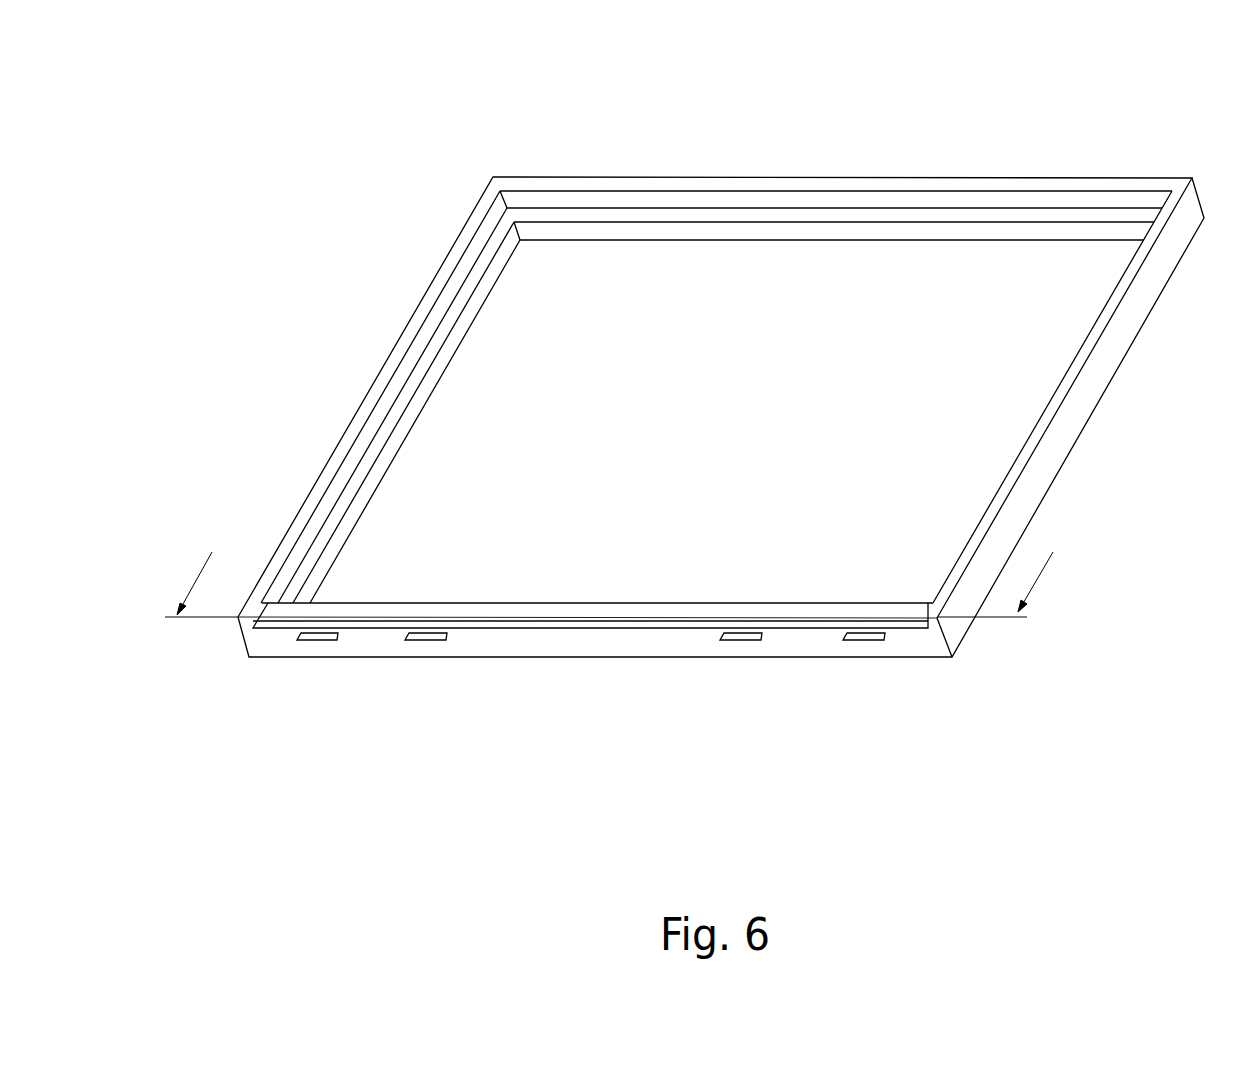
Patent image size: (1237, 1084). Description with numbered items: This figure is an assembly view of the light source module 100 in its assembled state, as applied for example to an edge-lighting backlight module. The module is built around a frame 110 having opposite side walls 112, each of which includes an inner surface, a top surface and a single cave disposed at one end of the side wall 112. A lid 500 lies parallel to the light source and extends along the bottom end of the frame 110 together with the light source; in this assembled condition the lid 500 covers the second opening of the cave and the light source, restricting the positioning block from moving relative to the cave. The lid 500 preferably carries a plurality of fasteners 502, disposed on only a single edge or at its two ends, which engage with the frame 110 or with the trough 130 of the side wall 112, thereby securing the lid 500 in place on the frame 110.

The light source module 100 is at (1215, 87).
The frame 110 is at (993, 186).
The side wall 112 is at (462, 245).
The lid 500 is at (433, 603).
The trough 130 is at (737, 641).
The fastener 502 is at (853, 643).